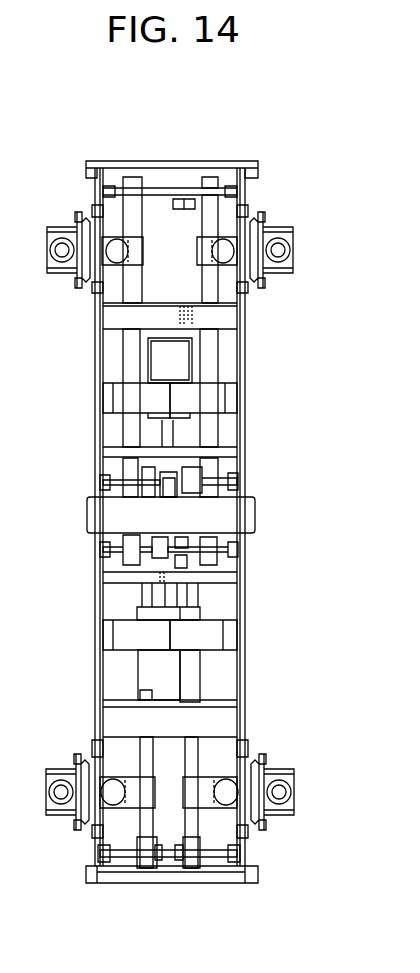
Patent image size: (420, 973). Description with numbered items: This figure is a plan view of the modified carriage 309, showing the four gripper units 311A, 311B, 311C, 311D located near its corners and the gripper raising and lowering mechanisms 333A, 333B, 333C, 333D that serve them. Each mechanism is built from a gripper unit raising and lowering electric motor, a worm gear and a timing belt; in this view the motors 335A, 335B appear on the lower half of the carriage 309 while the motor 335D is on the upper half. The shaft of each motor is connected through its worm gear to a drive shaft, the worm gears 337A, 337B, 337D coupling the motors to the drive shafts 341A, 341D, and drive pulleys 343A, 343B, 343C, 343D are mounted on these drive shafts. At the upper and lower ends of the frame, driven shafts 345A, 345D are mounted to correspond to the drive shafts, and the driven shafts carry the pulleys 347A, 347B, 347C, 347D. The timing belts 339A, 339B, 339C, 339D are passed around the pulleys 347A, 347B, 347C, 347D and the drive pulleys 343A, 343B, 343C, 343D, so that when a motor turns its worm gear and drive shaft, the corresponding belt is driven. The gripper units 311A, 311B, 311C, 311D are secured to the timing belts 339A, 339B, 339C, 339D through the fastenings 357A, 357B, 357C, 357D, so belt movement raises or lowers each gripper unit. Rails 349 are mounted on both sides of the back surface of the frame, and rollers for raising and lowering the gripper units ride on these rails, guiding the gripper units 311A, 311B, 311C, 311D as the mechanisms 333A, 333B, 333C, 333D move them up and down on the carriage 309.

The carriage 309 is at (264, 174).
The gripper unit 311A is at (68, 222).
The gripper unit 311B is at (340, 189).
The gripper unit 311C is at (66, 822).
The gripper unit 311D is at (360, 794).
The gripper raising and lowering mechanism 333A is at (116, 378).
The gripper raising and lowering mechanism 333B is at (323, 346).
The gripper raising and lowering mechanism 333C is at (128, 703).
The gripper raising and lowering mechanism 333D is at (323, 714).
The gripper unit raising and lowering electric motor 335A is at (145, 660).
The gripper unit raising and lowering electric motor 335B is at (195, 660).
The gripper unit raising and lowering electric motor 335D is at (182, 362).
The worm gear 337A is at (160, 542).
The worm gear 337B is at (185, 540).
The worm gear 337D is at (178, 487).
The timing belt 339A is at (128, 340).
The timing belt 339B is at (212, 378).
The timing belt 339C is at (147, 752).
The timing belt 339D is at (193, 752).
The drive shaft 341A is at (233, 552).
The drive shaft 341D is at (116, 488).
The drive pulley 343A is at (128, 550).
The drive pulley 343B is at (207, 558).
The drive pulley 343C is at (148, 470).
The drive pulley 343D is at (196, 470).
The driven shaft 345A is at (163, 188).
The driven shaft 345D is at (220, 858).
The pulley 347A is at (129, 177).
The pulley 347B is at (212, 177).
The pulley 347C is at (143, 868).
The pulley 347D is at (193, 868).
The rails 349 is at (98, 428).
The fastening 357A is at (146, 250).
The fastening 357B is at (190, 247).
The fastening 357C is at (156, 800).
The fastening 357D is at (193, 800).